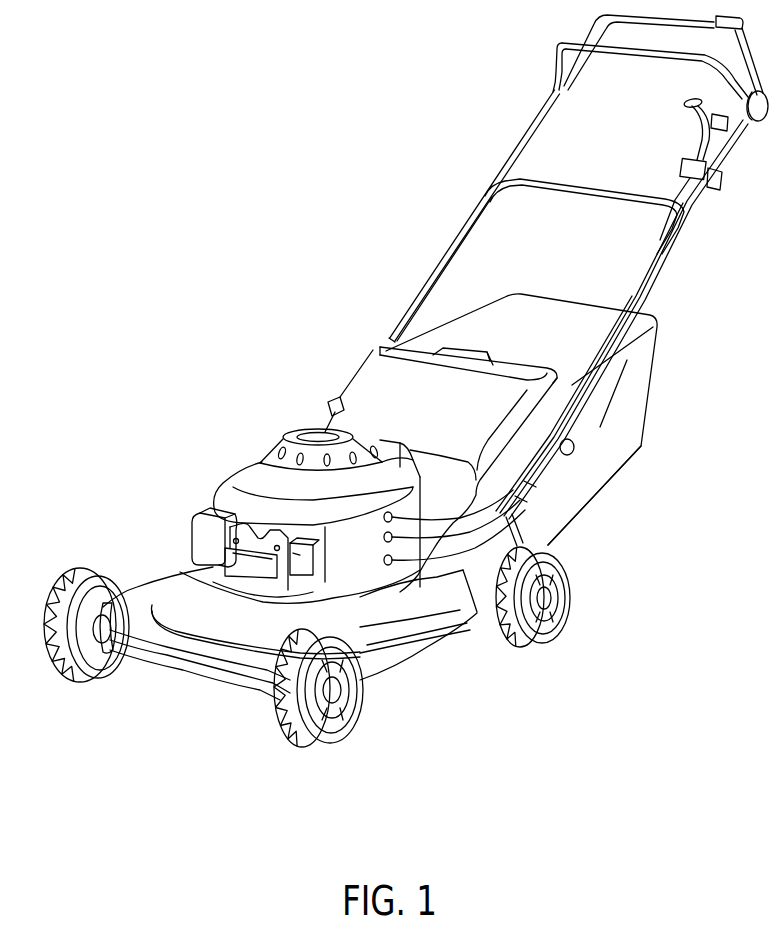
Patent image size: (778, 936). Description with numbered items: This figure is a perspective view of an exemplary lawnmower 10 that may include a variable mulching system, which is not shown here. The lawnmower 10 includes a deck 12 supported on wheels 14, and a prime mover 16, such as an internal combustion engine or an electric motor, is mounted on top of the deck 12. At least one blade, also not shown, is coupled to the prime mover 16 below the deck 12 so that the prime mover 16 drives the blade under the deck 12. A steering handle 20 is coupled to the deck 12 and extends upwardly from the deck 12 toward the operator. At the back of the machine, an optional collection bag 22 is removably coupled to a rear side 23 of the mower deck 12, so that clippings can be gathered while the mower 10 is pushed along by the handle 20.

The lawnmower 10 is at (203, 380).
The deck 12 is at (423, 660).
The wheels 14 is at (55, 592).
The prime mover 16 is at (240, 478).
The steering handle 20 is at (497, 175).
The collection bag 22 is at (632, 450).
The rear side 23 is at (581, 549).